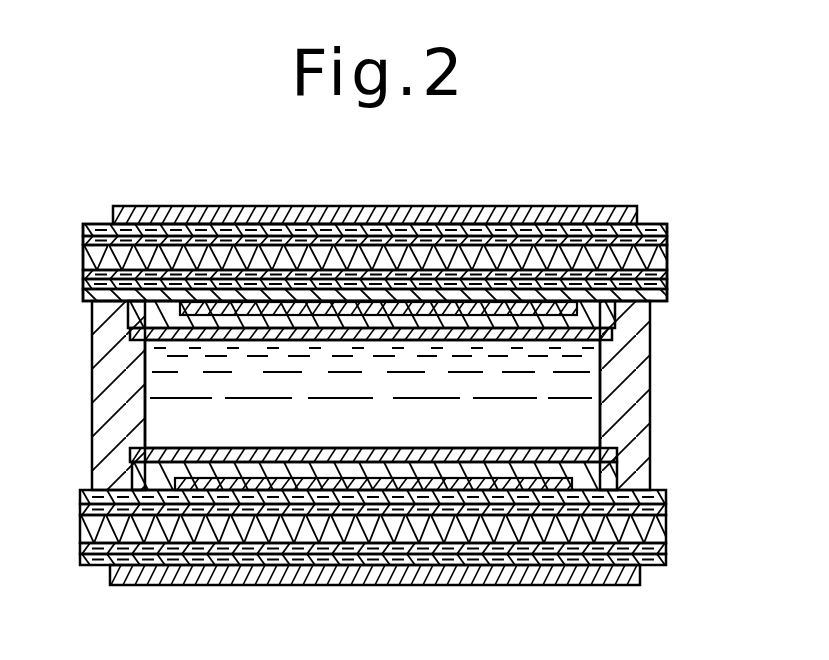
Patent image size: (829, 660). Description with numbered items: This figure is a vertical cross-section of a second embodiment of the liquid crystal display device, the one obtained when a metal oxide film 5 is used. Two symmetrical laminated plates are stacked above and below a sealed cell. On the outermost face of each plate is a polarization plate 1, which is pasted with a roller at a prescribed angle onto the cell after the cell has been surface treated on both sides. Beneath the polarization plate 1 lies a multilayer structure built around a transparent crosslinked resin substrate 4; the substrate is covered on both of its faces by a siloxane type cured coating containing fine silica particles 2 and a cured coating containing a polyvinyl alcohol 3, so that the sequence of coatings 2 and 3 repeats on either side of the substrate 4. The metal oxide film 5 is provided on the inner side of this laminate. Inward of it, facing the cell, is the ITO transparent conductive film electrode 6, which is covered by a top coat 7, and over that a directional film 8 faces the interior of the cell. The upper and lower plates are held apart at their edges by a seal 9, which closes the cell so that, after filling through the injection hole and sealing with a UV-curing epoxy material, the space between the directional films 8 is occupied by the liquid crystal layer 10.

The polarization plate 1 is at (636, 204).
The siloxane type cured coating containing fine silica particles 2 is at (667, 228).
The cured coating containing a polyvinyl alcohol 3 is at (667, 241).
The transparent crosslinked resin substrate 4 is at (667, 259).
The metal oxide film 5 is at (667, 296).
The ITO transparent conductive film electrode 6 is at (613, 305).
The top coat 7 is at (617, 318).
The directional film 8 is at (602, 338).
The seal 9 is at (642, 463).
The liquid crystal layer 10 is at (572, 419).